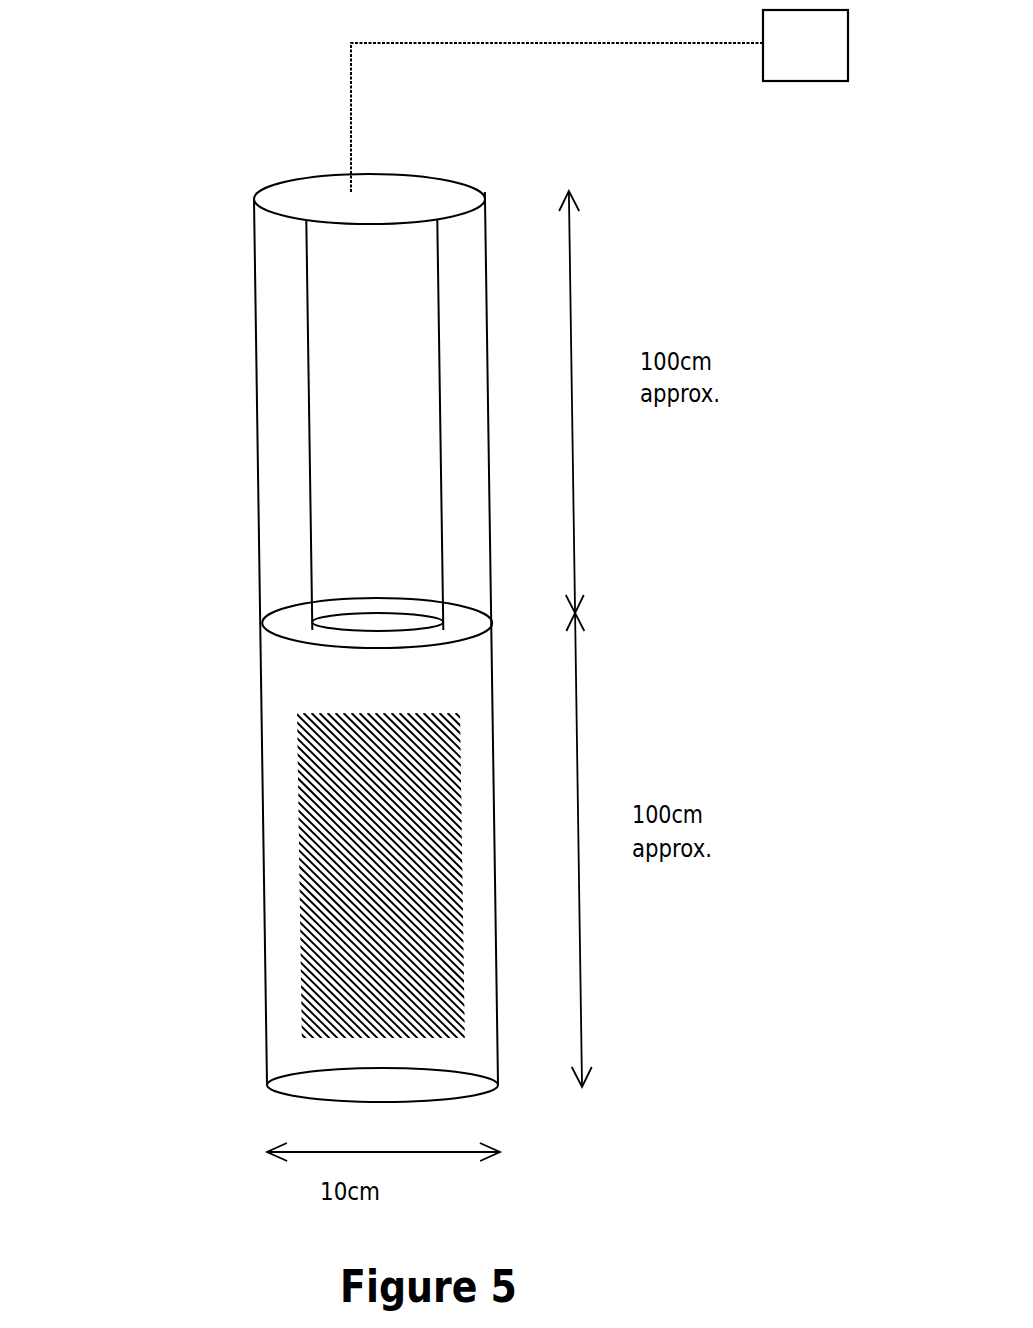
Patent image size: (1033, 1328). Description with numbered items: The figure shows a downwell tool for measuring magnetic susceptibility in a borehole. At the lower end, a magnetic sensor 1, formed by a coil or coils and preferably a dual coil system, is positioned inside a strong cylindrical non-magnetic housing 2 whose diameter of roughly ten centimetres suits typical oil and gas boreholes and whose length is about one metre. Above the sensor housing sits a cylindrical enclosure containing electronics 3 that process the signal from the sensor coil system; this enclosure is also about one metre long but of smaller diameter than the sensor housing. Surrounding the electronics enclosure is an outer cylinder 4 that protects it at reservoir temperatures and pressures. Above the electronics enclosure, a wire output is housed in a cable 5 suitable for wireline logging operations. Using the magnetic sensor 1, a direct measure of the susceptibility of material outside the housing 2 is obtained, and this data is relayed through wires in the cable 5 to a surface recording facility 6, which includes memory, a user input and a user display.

The magnetic sensor 1 is at (400, 883).
The cylindrical non-magnetic housing 2 is at (290, 850).
The electronics 3 is at (374, 425).
The outer cylinder 4 is at (275, 398).
The cable 5 is at (557, 117).
The surface recording facility 6 is at (805, 45).